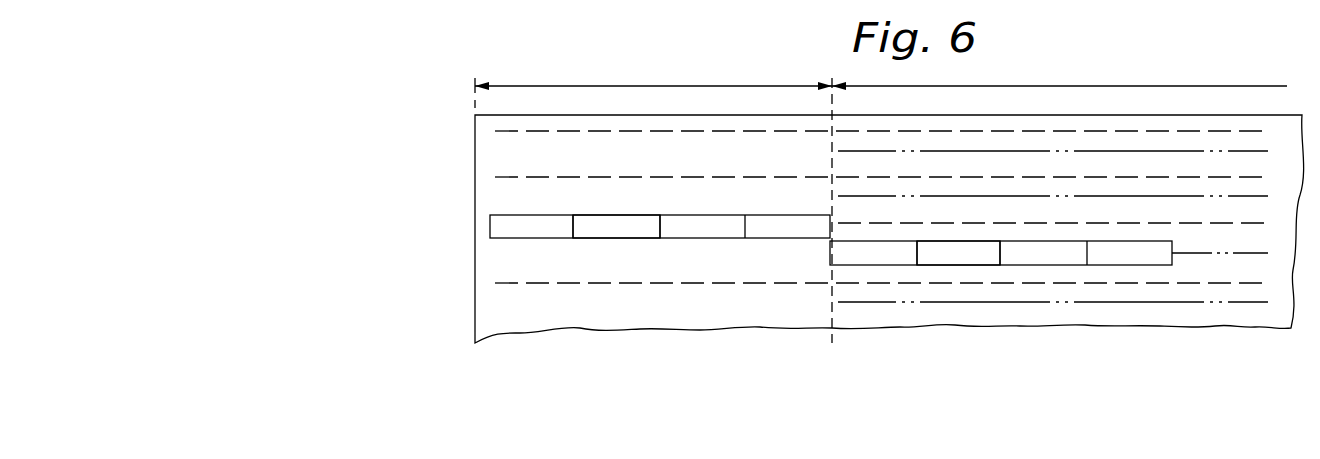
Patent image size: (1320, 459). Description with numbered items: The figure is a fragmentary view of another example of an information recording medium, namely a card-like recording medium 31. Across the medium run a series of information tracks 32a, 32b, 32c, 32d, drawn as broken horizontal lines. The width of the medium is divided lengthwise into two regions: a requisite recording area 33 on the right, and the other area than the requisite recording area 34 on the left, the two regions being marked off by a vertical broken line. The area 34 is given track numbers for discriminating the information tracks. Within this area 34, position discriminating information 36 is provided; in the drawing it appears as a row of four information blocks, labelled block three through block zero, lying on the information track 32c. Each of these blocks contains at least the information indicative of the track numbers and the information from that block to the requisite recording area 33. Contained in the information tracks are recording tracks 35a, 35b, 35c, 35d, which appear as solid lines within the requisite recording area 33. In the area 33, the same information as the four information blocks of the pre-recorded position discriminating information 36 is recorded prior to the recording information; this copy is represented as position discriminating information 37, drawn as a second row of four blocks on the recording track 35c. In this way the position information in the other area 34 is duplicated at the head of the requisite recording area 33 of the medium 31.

The card-like recording medium 31 is at (1215, 315).
The information track 32a is at (493, 146).
The information track 32b is at (493, 192).
The information track 32c is at (488, 232).
The information track 32d is at (488, 286).
The requisite recording area 33 is at (1059, 74).
The other area than the requisite recording area 34 is at (653, 74).
The recording track 35a is at (824, 151).
The recording track 35b is at (824, 194).
The recording track 35c is at (829, 251).
The recording track 35d is at (824, 304).
The position discriminating information 36 is at (632, 238).
The position discriminating information 37 is at (985, 265).